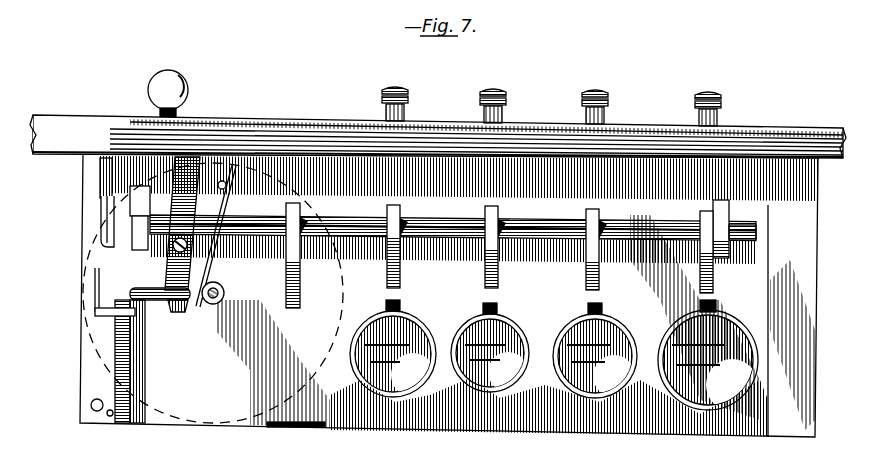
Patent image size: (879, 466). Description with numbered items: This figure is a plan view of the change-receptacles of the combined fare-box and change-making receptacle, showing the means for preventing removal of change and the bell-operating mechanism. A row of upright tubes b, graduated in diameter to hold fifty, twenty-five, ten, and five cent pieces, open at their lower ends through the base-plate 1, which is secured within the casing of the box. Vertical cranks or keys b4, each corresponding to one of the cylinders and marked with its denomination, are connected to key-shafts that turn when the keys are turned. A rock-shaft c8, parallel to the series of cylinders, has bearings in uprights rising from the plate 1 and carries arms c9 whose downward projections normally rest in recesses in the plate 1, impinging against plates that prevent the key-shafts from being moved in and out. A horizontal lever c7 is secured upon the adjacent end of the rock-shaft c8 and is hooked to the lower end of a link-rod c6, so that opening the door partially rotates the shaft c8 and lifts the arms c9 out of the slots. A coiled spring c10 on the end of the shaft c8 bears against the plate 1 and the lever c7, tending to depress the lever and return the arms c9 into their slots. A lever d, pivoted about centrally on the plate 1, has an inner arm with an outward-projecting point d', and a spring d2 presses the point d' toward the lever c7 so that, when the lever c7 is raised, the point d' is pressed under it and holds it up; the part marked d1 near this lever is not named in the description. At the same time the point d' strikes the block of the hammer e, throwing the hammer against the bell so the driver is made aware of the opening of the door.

The lever d is at (183, 178).
The vertical cranks or keys b4 is at (551, 93).
The coiled spring c10 is at (99, 228).
The lever arm d1 is at (186, 176).
The arms c9 is at (300, 209).
The rock-shaft c8 is at (352, 220).
The spring d2 is at (216, 256).
The outward-projecting point d' is at (203, 260).
The hammer e is at (100, 314).
The horizontal lever c7 is at (124, 378).
The link-rod c6 is at (110, 417).
The base-plate 1 is at (453, 300).
The upright tubes b is at (554, 356).